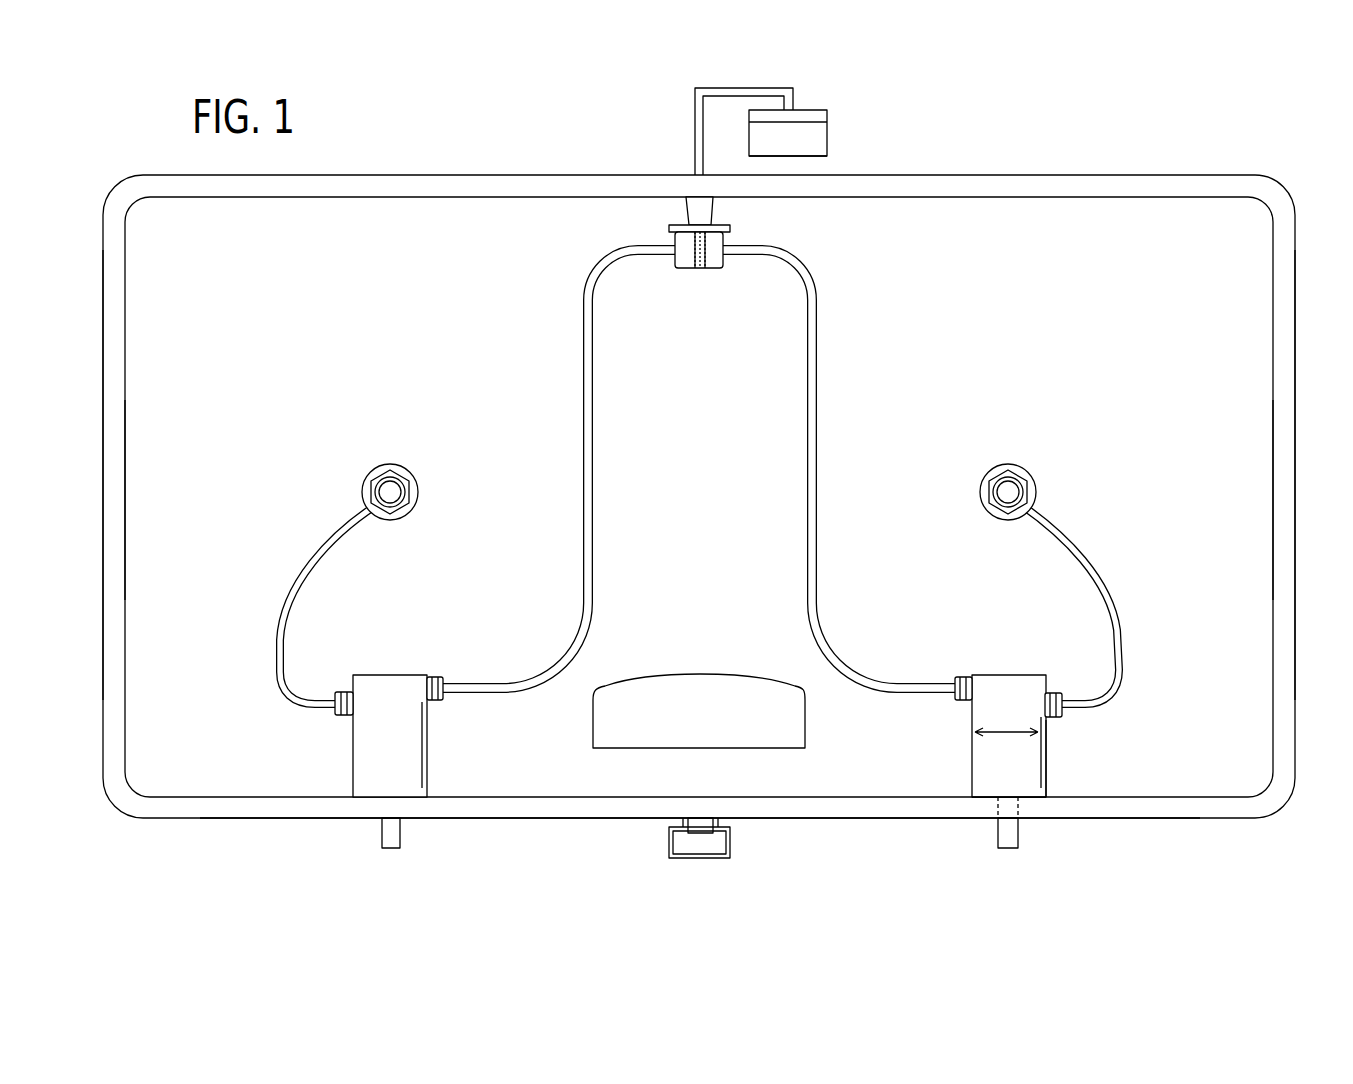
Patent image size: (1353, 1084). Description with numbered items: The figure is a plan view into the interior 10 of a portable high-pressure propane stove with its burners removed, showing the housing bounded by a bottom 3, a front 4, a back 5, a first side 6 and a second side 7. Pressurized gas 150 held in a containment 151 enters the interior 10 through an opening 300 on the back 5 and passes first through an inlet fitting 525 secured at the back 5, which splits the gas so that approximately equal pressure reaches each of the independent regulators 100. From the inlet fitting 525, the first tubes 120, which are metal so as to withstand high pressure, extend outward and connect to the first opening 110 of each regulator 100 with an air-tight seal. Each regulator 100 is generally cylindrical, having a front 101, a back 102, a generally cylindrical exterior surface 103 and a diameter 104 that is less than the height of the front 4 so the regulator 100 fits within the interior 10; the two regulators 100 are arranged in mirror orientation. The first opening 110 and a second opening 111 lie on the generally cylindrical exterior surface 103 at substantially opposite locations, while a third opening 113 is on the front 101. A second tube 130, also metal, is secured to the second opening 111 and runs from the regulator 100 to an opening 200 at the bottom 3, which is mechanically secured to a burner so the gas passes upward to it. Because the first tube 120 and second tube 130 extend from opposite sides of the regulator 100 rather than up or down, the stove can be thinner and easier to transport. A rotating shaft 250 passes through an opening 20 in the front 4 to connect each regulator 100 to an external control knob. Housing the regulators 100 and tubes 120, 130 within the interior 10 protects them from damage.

The bottom 3 is at (480, 397).
The front 4 is at (848, 820).
The back 5 is at (896, 175).
The first side 6 is at (1295, 323).
The second side 7 is at (103, 323).
The interior 10 is at (931, 397).
The opening 20 is at (1012, 822).
The regulator 100 is at (1029, 772).
The front 101 is at (1032, 797).
The back 102 is at (1010, 673).
The generally cylindrical exterior surface 103 is at (1043, 760).
The diameter 104 is at (1010, 730).
The first opening 110 is at (963, 690).
The second opening 111 is at (1060, 693).
The third opening 113 is at (1005, 797).
The first tube 120 is at (803, 557).
The second tube 130 is at (1115, 590).
The pressurized gas 150 is at (806, 151).
The containment 151 is at (827, 133).
The opening 200 is at (1022, 480).
The rotating shaft 250 is at (380, 835).
The opening 300 is at (695, 176).
The inlet fitting 525 is at (688, 244).